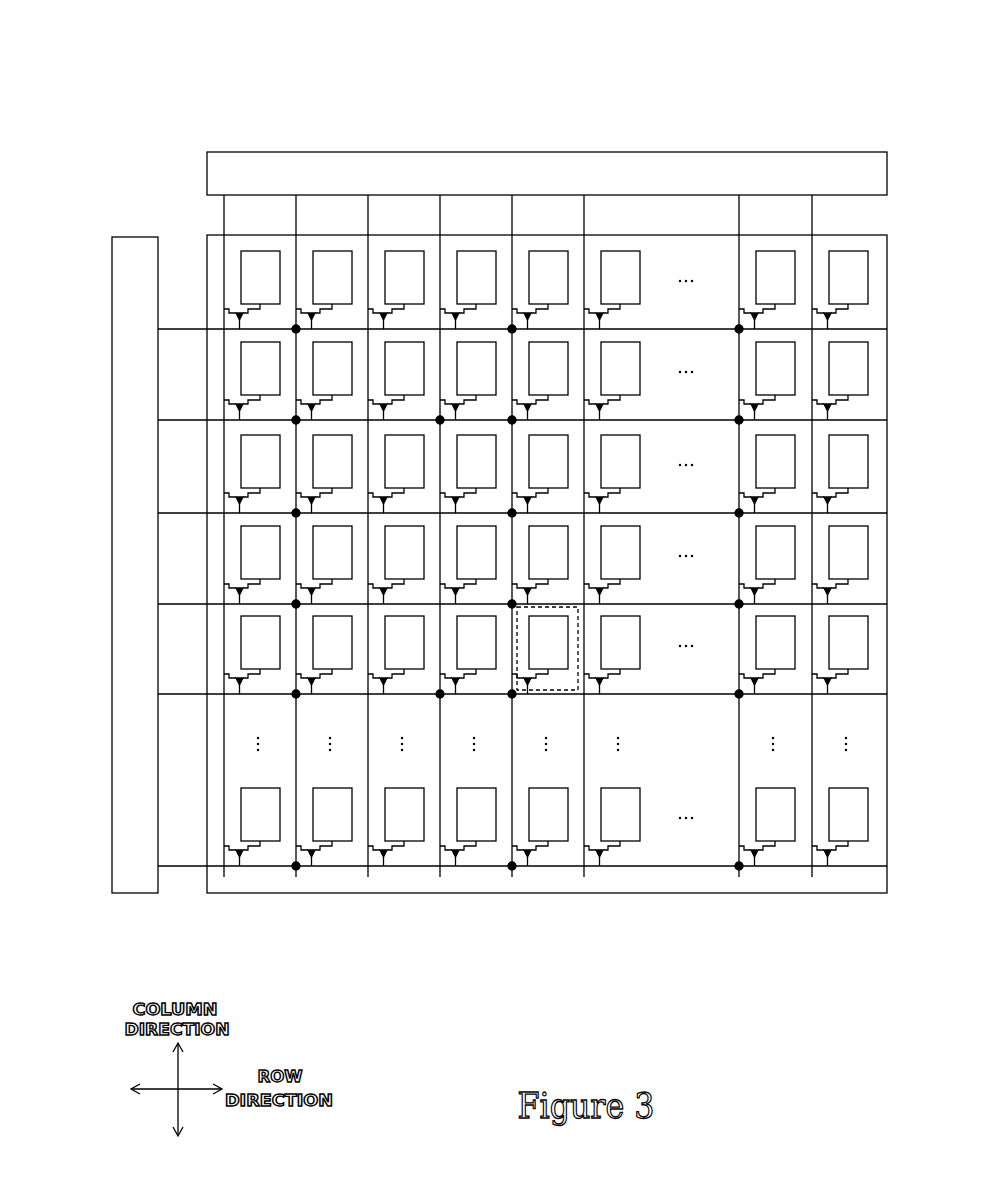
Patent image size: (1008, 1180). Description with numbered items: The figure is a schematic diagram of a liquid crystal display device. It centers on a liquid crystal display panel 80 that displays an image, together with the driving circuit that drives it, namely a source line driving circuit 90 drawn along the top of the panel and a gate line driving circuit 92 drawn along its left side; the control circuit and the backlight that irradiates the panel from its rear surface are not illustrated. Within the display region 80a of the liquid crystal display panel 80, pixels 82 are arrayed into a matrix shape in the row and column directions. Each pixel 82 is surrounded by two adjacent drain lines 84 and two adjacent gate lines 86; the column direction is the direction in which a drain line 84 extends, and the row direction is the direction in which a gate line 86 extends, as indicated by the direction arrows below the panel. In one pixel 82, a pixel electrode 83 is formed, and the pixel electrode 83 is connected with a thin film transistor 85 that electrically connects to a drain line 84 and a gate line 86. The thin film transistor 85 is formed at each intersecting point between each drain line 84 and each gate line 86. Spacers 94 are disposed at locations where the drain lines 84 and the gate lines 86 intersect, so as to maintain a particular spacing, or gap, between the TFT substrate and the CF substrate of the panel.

The liquid crystal display panel 80 is at (149, 116).
The display region 80a is at (322, 895).
The pixel 82 is at (571, 673).
The pixel electrode 83 is at (580, 667).
The drain line 84 is at (590, 221).
The thin film transistor 85 is at (515, 708).
The gate line 86 is at (178, 694).
The source line driving circuit 90 is at (777, 157).
The gate line driving circuit 92 is at (101, 664).
The spacer 94 is at (445, 706).